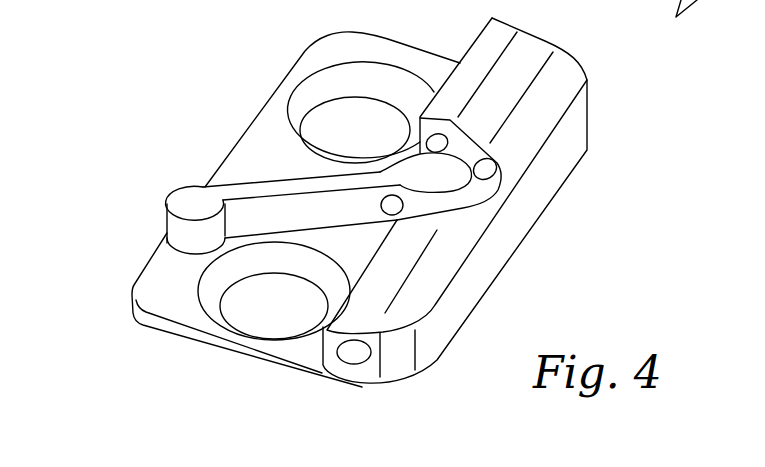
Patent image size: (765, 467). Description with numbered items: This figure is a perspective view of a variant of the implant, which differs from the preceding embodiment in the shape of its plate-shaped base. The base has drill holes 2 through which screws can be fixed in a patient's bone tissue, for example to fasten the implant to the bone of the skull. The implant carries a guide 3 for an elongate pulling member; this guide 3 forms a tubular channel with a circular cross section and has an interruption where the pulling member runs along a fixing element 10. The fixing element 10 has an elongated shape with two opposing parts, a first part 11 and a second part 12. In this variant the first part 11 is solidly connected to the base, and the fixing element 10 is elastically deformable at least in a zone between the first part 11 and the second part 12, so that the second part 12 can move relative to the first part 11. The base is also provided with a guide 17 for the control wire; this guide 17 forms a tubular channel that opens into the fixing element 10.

The drill holes 2 is at (332, 122).
The guide 3 is at (355, 363).
The fixing element 10 is at (325, 174).
The first part 11 is at (190, 210).
The second part 12 is at (438, 177).
The guide 17 is at (437, 143).